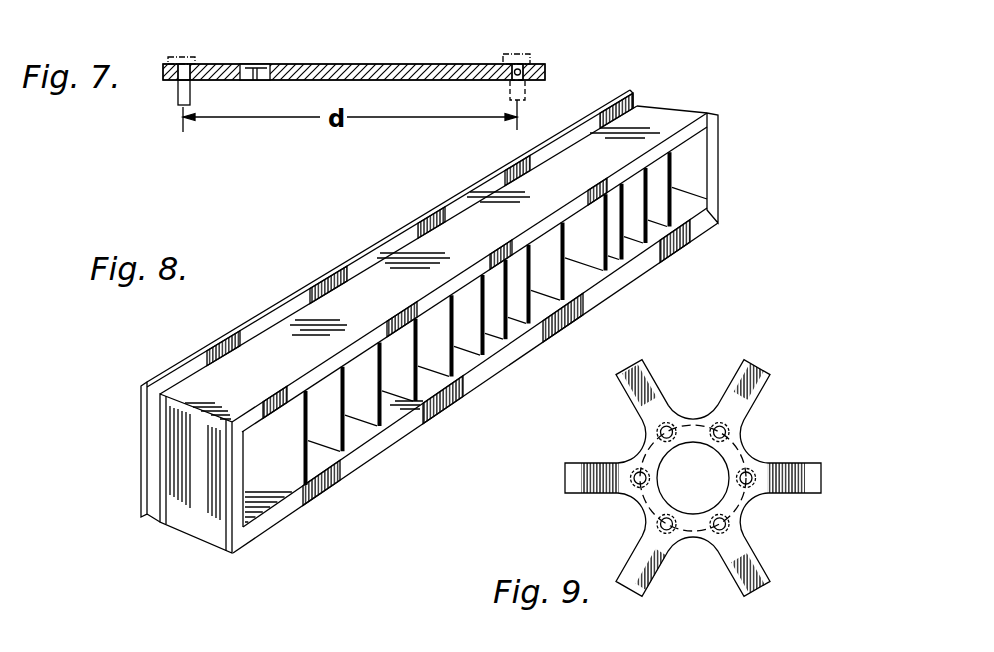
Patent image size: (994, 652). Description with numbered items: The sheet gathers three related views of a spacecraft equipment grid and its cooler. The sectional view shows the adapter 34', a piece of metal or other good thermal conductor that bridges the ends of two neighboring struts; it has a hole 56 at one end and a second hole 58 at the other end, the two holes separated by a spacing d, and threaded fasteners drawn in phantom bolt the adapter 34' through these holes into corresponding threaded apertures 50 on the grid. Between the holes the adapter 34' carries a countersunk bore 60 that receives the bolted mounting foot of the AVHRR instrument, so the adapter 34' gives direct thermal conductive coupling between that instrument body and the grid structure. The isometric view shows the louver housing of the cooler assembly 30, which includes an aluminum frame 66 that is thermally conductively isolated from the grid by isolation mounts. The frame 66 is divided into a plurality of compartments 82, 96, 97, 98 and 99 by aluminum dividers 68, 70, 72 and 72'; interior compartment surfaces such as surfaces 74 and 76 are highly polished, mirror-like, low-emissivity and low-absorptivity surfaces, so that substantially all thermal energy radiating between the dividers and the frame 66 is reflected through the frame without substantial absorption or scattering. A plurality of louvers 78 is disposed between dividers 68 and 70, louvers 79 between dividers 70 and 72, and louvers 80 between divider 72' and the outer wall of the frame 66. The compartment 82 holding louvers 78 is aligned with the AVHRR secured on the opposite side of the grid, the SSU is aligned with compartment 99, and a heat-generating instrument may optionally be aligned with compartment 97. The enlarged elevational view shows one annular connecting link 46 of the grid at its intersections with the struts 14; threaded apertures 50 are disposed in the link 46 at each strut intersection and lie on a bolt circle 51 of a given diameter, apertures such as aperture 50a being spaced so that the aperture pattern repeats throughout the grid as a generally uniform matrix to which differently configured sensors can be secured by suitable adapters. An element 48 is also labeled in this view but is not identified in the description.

In FIG. 7, the adapter 34' is at (354, 46).
In FIG. 7, the hole 56 is at (180, 91).
In FIG. 7, the second hole 58 is at (518, 58).
In FIG. 7, the countersunk bore 60 is at (258, 63).
In FIG. 8, the cooler assembly 30 is at (742, 138).
In FIG. 8, the frame 66 is at (657, 118).
In FIG. 8, the divider 68 is at (313, 483).
In FIG. 8, the divider 70 is at (475, 386).
In FIG. 8, the divider 72 is at (507, 319).
In FIG. 8, the divider 72' is at (625, 256).
In FIG. 8, the interior compartment surface 74 is at (476, 342).
In FIG. 8, the interior compartment surface 76 is at (700, 172).
In FIG. 8, the louvers 78 is at (400, 343).
In FIG. 8, the louvers 79 is at (578, 240).
In FIG. 8, the louvers 80 is at (643, 237).
In FIG. 8, the compartment 82 is at (368, 437).
In FIG. 8, the compartment 96 is at (253, 512).
In FIG. 8, the compartment 97 is at (660, 173).
In FIG. 8, the compartment 98 is at (580, 237).
In FIG. 8, the compartment 99 is at (513, 267).
In FIG. 9, the struts 14 is at (753, 372).
In FIG. 9, the annular connecting link 46 is at (748, 447).
In FIG. 9, the hub 48 is at (690, 462).
In FIG. 9, the threaded apertures 50 is at (636, 474).
In FIG. 9, the aperture 50a is at (716, 422).
In FIG. 9, the bolt circle 51 is at (688, 533).